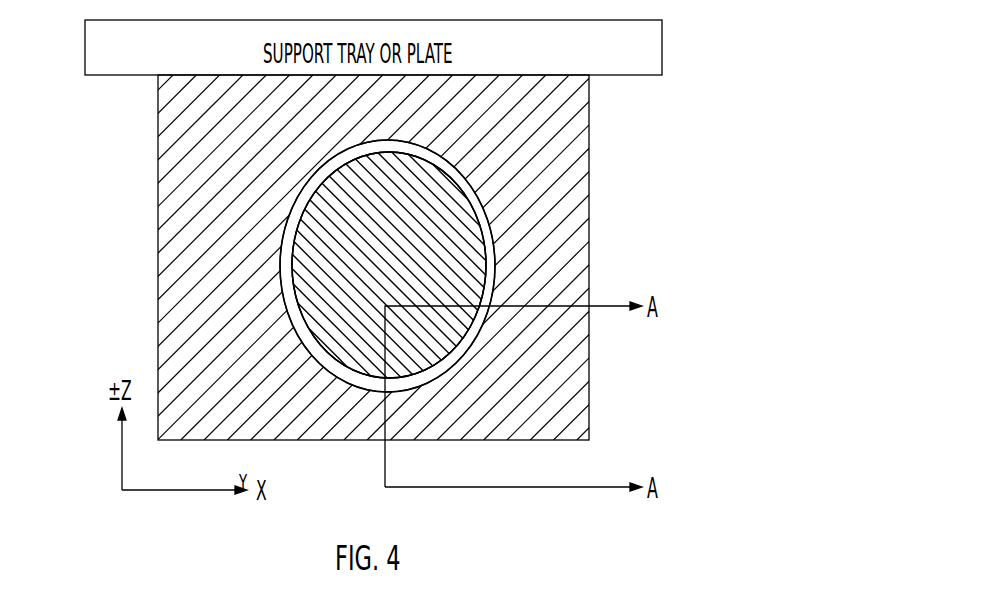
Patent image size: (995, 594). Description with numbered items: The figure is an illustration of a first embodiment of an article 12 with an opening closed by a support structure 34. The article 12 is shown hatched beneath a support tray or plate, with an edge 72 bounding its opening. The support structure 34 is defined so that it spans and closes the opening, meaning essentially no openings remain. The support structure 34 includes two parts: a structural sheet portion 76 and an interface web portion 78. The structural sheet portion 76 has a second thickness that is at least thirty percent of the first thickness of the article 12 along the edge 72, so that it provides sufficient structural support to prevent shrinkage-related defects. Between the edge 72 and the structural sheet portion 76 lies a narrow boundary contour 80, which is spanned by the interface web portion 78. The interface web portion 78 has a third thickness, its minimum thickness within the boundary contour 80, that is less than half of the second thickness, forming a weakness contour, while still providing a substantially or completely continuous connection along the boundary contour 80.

The article 12 is at (565, 131).
The support structure 34 is at (330, 192).
The edge 72 is at (490, 245).
The structural sheet portion 76 is at (308, 233).
The interface web portion 78 is at (287, 302).
The boundary contour 80 is at (290, 260).